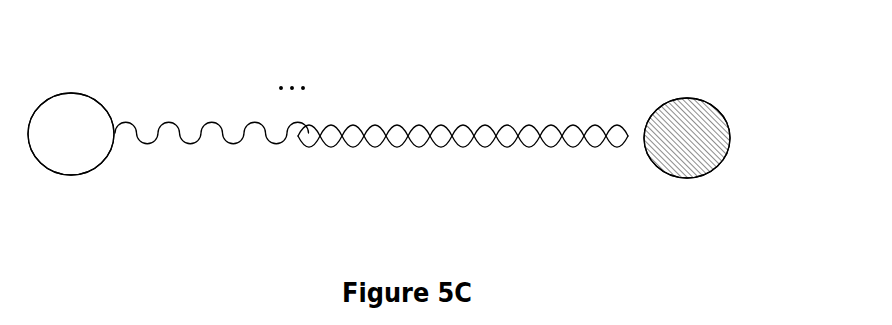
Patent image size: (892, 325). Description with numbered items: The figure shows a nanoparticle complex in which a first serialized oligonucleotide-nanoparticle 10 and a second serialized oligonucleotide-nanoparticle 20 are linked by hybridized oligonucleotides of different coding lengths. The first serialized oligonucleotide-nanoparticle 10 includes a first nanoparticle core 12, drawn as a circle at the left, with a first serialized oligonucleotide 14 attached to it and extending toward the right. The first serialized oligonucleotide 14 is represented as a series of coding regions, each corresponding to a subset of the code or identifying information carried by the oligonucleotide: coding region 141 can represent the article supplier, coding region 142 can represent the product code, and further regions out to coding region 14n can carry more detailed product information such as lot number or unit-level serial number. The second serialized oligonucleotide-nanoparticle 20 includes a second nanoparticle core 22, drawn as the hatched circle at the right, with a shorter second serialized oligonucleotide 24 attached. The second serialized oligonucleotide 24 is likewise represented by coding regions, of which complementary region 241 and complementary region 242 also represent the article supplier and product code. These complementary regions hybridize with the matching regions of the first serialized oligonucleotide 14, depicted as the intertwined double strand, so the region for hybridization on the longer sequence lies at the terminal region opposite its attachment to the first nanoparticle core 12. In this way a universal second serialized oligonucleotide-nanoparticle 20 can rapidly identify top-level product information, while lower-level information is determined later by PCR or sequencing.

The first serialized oligonucleotide-nanoparticle 10 is at (105, 90).
The first nanoparticle core 12 is at (97, 175).
The coding region 14n is at (287, 116).
The coding region 142 is at (460, 116).
The coding region 141 is at (632, 116).
The first serialized oligonucleotide 14 is at (463, 107).
The complementary region 242 is at (460, 152).
The complementary region 241 is at (632, 152).
The second serialized oligonucleotide 24 is at (463, 165).
The second serialized oligonucleotide-nanoparticle 20 is at (715, 90).
The second nanoparticle core 22 is at (710, 177).